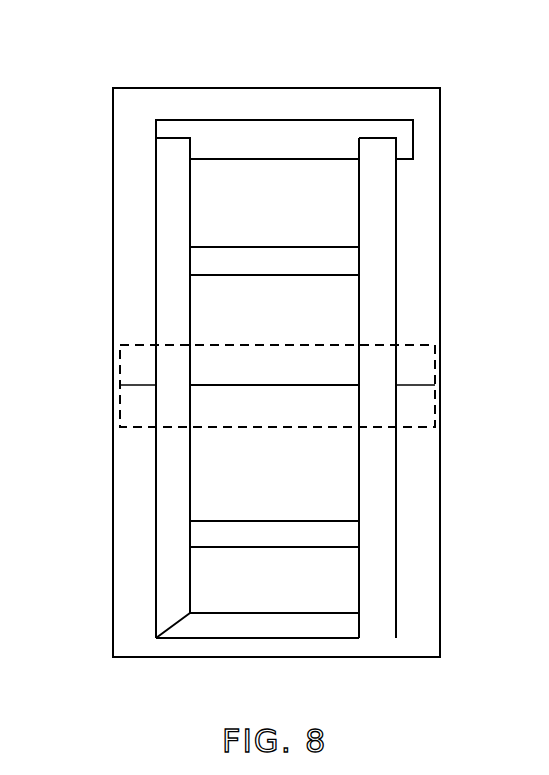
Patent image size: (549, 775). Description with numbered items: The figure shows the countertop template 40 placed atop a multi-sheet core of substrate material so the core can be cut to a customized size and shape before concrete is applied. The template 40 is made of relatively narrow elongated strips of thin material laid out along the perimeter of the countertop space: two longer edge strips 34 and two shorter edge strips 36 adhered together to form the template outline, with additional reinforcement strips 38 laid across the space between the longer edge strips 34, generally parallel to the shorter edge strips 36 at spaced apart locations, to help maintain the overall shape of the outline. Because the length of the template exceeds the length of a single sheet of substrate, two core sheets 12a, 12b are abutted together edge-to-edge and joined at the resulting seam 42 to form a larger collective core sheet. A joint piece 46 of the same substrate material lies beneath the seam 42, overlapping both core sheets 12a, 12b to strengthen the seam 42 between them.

The core sheet 12a is at (128, 327).
The core sheet 12b is at (130, 586).
The longer edge strip 34 is at (170, 243).
The shorter edge strip 36 is at (285, 140).
The reinforcement strip 38 is at (255, 268).
The template 40 is at (180, 172).
The seam 42 is at (415, 385).
The joint piece 46 is at (415, 412).